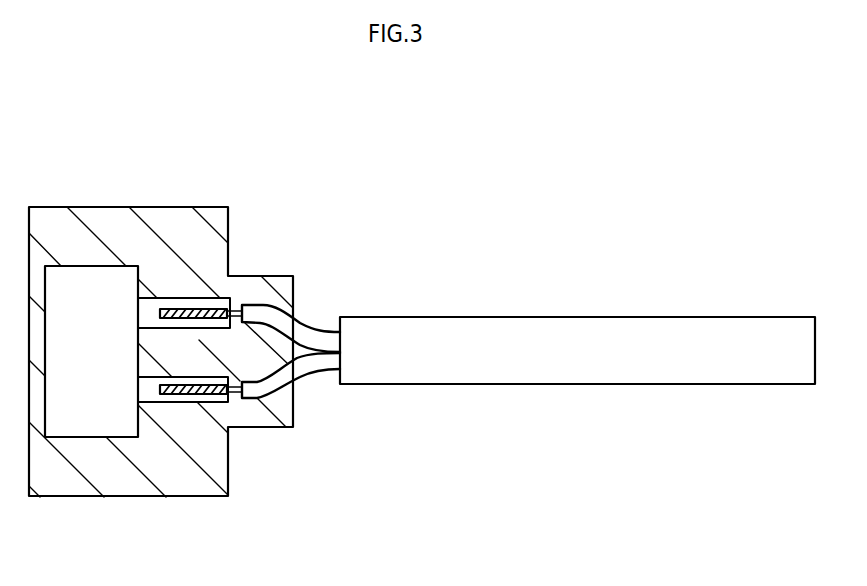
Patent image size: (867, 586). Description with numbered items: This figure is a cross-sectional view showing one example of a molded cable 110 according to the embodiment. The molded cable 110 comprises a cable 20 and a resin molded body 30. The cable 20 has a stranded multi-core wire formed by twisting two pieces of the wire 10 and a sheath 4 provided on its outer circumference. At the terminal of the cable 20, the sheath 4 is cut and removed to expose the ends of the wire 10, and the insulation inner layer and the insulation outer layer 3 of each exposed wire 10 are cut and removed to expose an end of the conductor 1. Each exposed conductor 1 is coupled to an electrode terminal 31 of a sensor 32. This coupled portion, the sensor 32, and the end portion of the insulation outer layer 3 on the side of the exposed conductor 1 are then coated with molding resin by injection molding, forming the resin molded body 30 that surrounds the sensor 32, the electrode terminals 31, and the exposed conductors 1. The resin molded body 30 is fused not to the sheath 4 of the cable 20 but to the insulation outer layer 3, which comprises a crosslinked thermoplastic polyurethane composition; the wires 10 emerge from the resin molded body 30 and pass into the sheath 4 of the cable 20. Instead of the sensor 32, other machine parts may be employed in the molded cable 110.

The molded cable 110 is at (458, 190).
The resin molded body 30 is at (165, 473).
The sensor 32 is at (95, 288).
The electrode terminal 31 is at (187, 299).
The conductor 1 is at (202, 392).
The wire 10 is at (308, 397).
The insulation outer layer 3 is at (277, 322).
The cable 20 is at (726, 304).
The sheath 4 is at (587, 370).